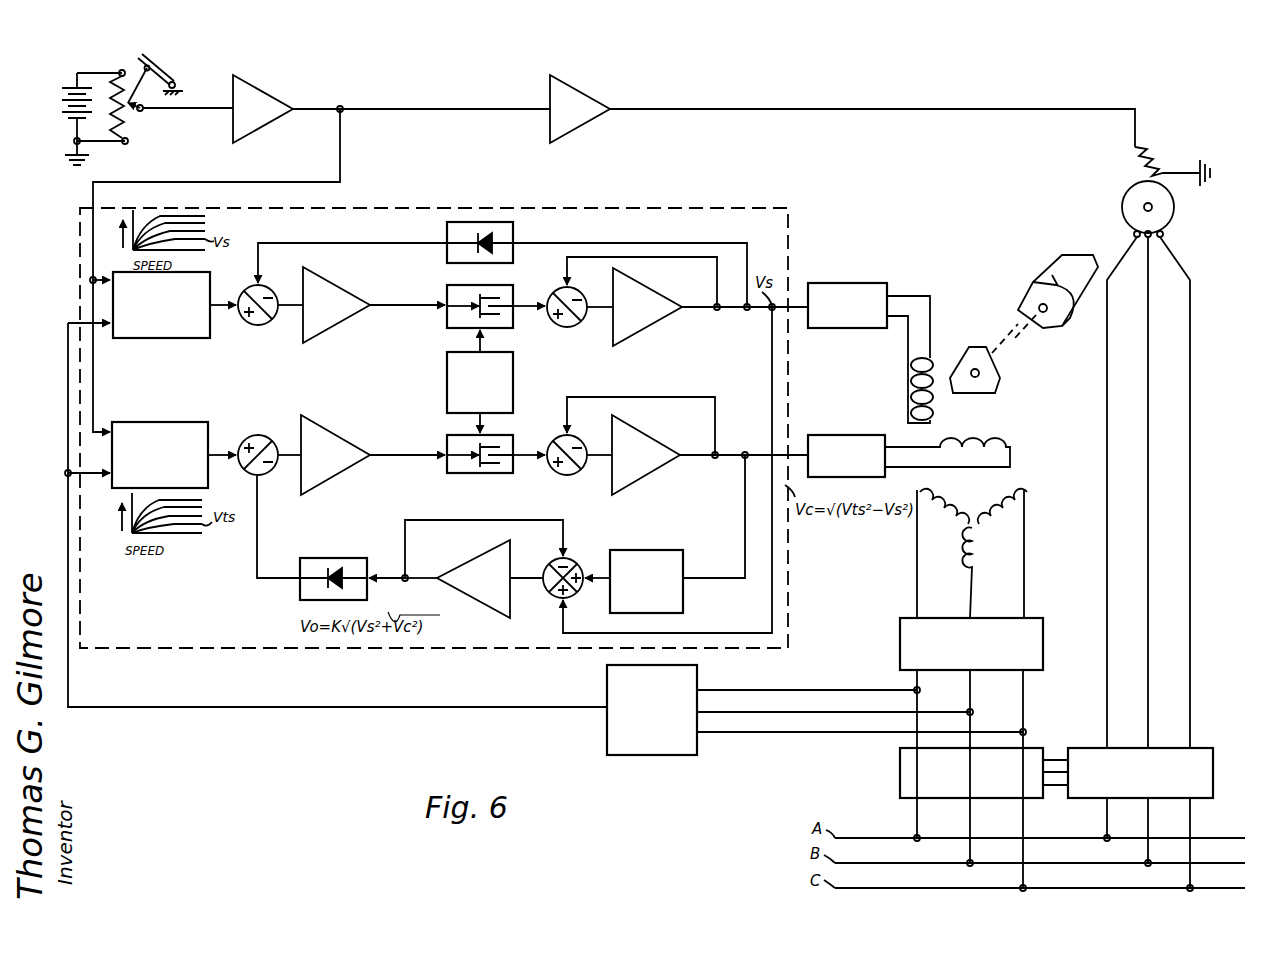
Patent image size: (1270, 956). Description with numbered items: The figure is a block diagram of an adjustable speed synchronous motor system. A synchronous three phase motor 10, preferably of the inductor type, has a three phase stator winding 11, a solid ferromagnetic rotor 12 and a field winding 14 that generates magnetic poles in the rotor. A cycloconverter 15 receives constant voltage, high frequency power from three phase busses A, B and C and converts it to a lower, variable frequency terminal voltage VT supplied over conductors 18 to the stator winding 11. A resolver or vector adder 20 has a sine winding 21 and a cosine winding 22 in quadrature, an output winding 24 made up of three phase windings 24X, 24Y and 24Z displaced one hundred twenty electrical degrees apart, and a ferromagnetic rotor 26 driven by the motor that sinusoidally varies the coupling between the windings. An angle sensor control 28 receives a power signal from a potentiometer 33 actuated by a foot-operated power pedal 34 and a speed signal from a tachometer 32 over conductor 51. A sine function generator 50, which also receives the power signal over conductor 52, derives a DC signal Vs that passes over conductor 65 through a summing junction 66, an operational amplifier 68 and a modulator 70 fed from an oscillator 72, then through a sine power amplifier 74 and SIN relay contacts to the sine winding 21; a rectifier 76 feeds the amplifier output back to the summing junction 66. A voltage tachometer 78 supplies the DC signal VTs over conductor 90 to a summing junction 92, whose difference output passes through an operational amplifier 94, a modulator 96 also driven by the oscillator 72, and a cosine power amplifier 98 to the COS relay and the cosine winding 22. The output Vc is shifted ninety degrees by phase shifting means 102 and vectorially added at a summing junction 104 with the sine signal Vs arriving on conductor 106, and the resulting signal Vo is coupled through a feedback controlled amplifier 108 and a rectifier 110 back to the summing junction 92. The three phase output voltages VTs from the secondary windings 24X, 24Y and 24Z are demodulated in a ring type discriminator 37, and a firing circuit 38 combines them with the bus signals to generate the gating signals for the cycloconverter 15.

The synchronous three phase motor 10 is at (1115, 206).
The stator winding 11 is at (1130, 195).
The rotor 12 is at (1040, 276).
The field winding 14 is at (1160, 150).
The cycloconverter 15 is at (1213, 757).
The conductors 18 is at (1107, 505).
The vector adder 20 is at (927, 380).
The sine winding 21 is at (913, 390).
The cosine winding 22 is at (1006, 438).
The output winding 24 is at (995, 540).
The secondary phase winding 24X is at (950, 498).
The secondary phase winding 24Y is at (1027, 502).
The secondary phase winding 24Z is at (984, 565).
The ferromagnetic rotor 26 is at (1000, 380).
The angle sensor control 28 is at (790, 243).
The tachometer 32 is at (650, 755).
The potentiometer 33 is at (128, 122).
The power pedal 34 is at (160, 72).
The ring type discriminator 37 is at (1043, 656).
The firing circuit 38 is at (900, 766).
The sine function generator 50 is at (191, 338).
The conductor 51 is at (175, 708).
The conductor 52 is at (205, 183).
The conductor 65 is at (222, 300).
The summing junction 66 is at (268, 288).
The operational amplifier 68 is at (340, 290).
The modulator 70 is at (447, 325).
The oscillator 72 is at (447, 385).
The sine power amplifier 74 is at (652, 327).
The rectifier 76 is at (510, 240).
The voltage tachometer 78 is at (172, 426).
The conductor 90 is at (224, 450).
The summing junction 92 is at (265, 440).
The operational amplifier 94 is at (340, 441).
The modulator 96 is at (454, 473).
The cosine power amplifier 98 is at (632, 480).
The phase shifting means 102 is at (665, 544).
The summing junction 104 is at (577, 562).
The conductor 106 is at (772, 364).
The feedback controlled amplifier 108 is at (475, 556).
The rectifier 110 is at (352, 550).